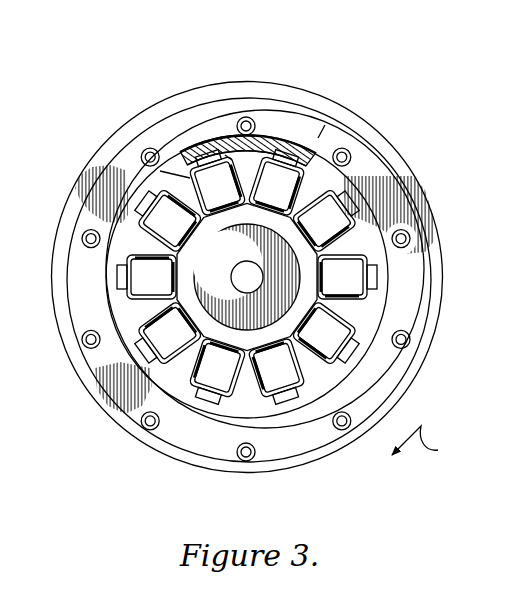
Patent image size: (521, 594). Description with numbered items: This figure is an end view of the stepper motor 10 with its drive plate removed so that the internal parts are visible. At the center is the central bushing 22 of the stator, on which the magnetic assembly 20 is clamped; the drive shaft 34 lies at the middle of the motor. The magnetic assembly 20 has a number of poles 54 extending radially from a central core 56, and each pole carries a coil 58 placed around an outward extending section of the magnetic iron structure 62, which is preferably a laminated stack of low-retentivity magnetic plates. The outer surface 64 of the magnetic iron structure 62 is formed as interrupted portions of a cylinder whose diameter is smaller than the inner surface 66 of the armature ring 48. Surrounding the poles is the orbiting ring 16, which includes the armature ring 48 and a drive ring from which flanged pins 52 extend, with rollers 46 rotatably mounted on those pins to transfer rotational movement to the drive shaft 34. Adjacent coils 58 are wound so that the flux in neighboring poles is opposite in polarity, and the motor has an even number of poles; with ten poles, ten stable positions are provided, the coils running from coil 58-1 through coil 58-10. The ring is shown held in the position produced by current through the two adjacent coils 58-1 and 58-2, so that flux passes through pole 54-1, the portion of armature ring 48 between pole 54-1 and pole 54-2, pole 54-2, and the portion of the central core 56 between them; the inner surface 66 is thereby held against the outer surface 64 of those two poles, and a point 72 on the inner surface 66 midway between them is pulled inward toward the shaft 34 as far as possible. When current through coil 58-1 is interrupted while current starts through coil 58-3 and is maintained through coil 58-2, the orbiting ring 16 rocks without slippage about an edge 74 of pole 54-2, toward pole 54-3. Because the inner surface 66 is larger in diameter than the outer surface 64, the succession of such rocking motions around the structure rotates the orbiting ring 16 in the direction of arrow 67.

The stepper motor 10 is at (335, 488).
The orbiting ring 16 is at (103, 407).
The magnetic assembly 20 is at (128, 250).
The central bushing 22 is at (252, 258).
The drive shaft 34 is at (118, 268).
The rollers 46 is at (412, 250).
The armature ring 48 is at (313, 135).
The flanged pins 52 is at (410, 332).
The poles 54 is at (352, 353).
The pole 54-1 is at (190, 178).
The pole 54-2 is at (280, 152).
The pole 54-3 is at (342, 178).
The central core 56 is at (231, 278).
The coils 58 is at (350, 218).
The coil 58-1 is at (160, 171).
The coil 58-2 is at (225, 155).
The coil 58-3 is at (325, 125).
The coil 58-10 is at (125, 220).
The magnetic iron structure 62 is at (242, 402).
The outer surface 64 is at (218, 402).
The inner surface 66 is at (105, 385).
The arrow 67 is at (428, 444).
The point 72 is at (270, 135).
The edge 74 is at (326, 128).